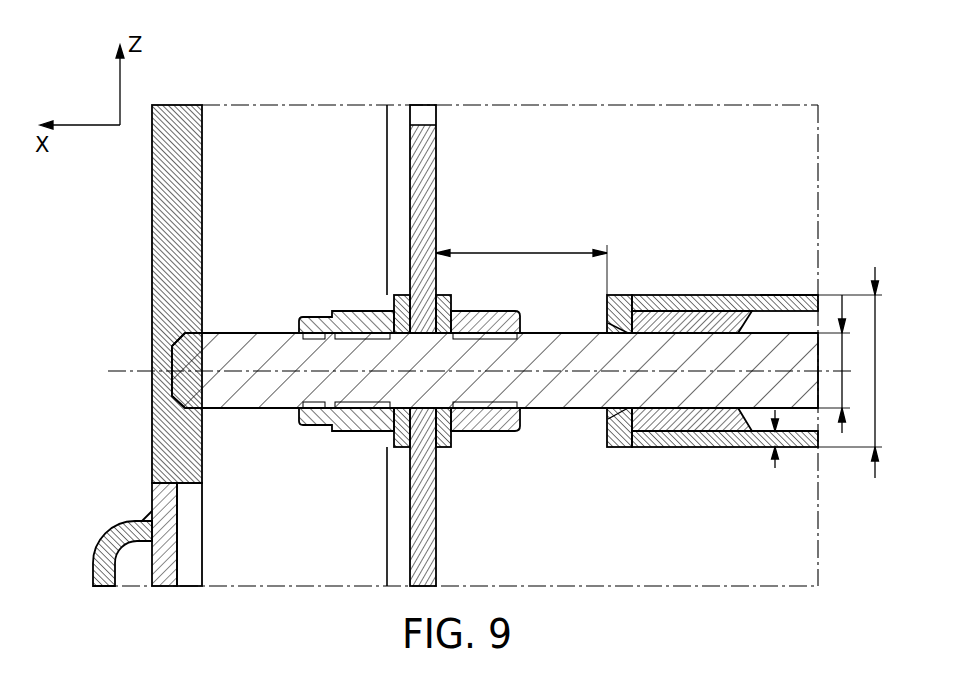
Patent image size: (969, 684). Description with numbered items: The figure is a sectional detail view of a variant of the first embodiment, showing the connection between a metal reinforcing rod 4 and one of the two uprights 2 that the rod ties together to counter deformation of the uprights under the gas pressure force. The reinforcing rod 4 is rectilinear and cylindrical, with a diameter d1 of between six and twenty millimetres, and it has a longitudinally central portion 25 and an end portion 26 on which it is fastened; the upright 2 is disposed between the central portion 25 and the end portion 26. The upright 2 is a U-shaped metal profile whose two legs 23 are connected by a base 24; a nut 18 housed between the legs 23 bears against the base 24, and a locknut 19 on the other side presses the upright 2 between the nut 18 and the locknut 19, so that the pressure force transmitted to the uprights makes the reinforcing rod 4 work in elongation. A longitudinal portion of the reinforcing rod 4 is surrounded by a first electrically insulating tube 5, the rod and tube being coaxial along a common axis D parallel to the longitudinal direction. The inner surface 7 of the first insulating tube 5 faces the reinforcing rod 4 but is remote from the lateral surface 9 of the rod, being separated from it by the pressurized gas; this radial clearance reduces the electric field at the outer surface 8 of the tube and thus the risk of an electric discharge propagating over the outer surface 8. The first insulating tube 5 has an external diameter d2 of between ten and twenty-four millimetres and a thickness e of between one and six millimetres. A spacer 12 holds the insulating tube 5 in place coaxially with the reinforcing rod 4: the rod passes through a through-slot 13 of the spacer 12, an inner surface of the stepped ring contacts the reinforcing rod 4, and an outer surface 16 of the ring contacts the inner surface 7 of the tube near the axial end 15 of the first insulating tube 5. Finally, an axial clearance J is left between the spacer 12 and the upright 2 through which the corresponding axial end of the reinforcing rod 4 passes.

The upright 2 is at (168, 440).
The reinforcing rod 4 is at (266, 349).
The first electrically insulating tube 5 is at (718, 437).
The inner surface 7 is at (784, 305).
The outer surface 8 is at (746, 303).
The lateral surface 9 is at (793, 410).
The spacer 12 is at (620, 308).
The through-slot 13 is at (682, 420).
The axial end 15 is at (633, 445).
The outer surface of the ring 16 is at (650, 318).
The nut 18 is at (355, 318).
The locknut 19 is at (487, 418).
The leg 23 is at (268, 135).
The base 24 is at (423, 195).
The central portion 25 is at (683, 355).
The end portion 26 is at (198, 388).
The common axis D is at (123, 367).
The axial clearance J is at (521, 263).
The diameter of the reinforcing rod d1 is at (845, 364).
The external diameter of the first insulating tube d2 is at (853, 359).
The thickness of the first insulating tube e is at (774, 452).